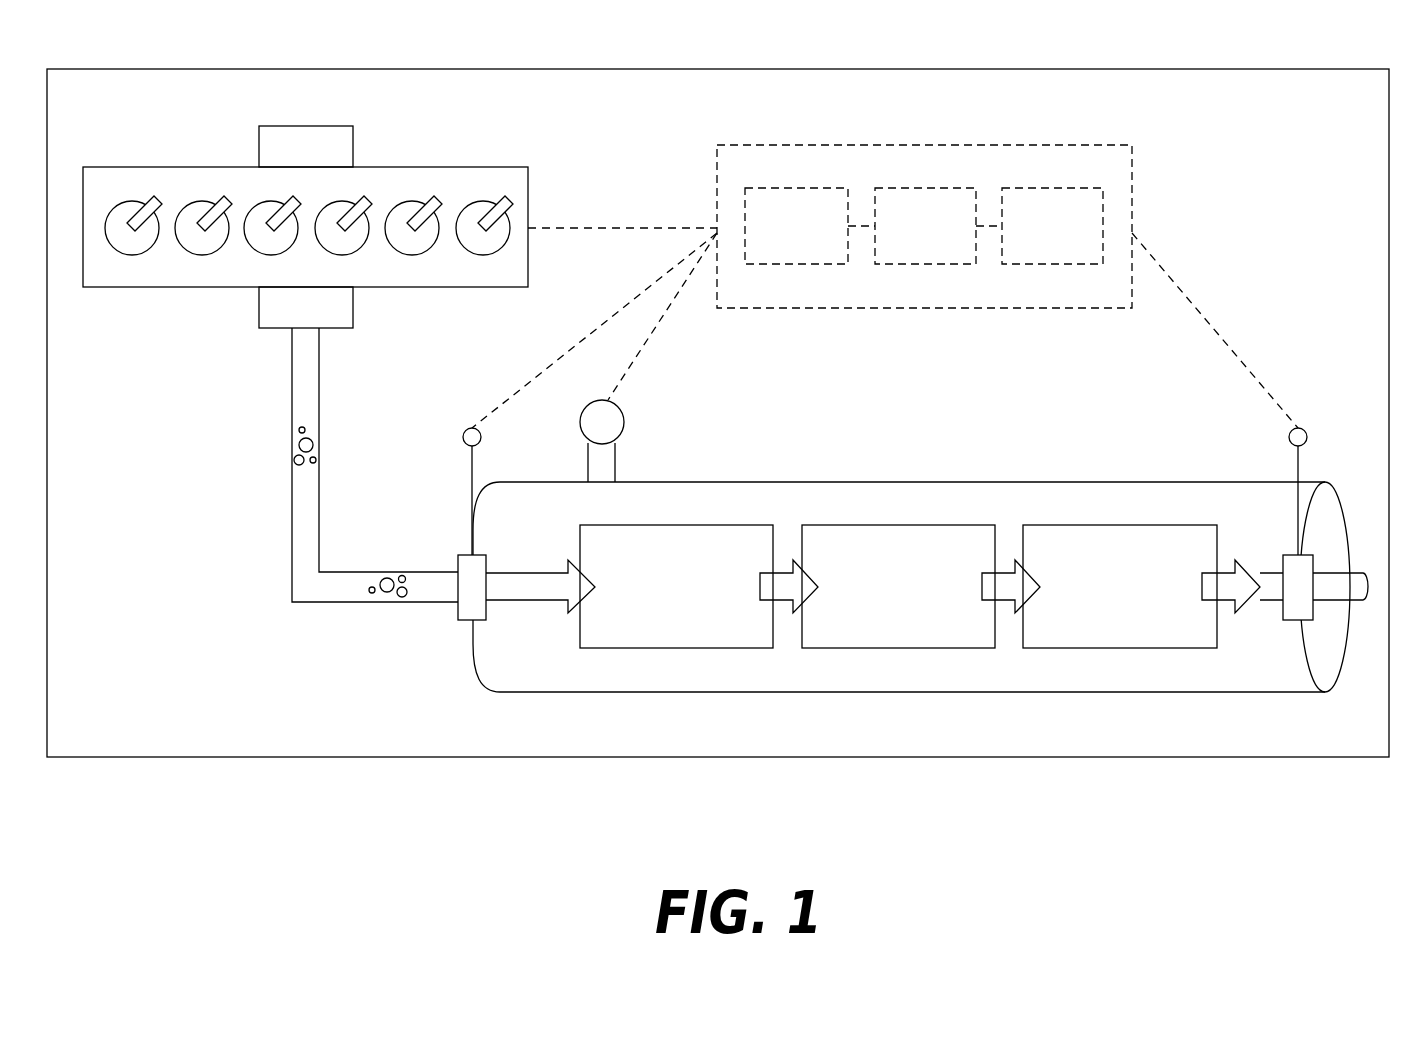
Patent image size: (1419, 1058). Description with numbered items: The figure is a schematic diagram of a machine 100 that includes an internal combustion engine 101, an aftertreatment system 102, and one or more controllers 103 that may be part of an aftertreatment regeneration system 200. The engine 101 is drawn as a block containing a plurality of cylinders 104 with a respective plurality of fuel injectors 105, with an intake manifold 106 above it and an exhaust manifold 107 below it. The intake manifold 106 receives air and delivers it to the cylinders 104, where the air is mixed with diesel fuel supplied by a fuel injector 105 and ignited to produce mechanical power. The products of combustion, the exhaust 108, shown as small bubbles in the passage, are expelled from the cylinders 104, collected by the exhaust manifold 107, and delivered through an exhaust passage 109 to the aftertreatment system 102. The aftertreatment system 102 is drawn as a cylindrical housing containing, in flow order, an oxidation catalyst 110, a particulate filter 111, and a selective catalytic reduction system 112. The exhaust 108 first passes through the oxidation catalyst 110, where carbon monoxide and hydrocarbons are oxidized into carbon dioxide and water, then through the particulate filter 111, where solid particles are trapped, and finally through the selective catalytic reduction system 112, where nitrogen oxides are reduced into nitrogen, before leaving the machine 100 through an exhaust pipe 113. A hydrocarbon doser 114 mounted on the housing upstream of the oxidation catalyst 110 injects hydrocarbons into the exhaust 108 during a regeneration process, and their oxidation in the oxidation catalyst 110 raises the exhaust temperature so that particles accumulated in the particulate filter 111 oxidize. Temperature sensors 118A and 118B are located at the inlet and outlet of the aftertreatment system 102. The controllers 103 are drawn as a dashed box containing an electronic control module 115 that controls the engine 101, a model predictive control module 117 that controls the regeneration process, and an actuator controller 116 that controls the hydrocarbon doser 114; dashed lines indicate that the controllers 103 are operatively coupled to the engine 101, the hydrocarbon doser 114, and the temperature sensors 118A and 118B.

The machine 100 is at (1168, 67).
The aftertreatment regeneration system 200 is at (973, 223).
The internal combustion engine 101 is at (195, 288).
The aftertreatment system 102 is at (1090, 466).
The controller 103 is at (924, 248).
The cylinder 104 is at (411, 200).
The fuel injector 105 is at (413, 224).
The intake manifold 106 is at (262, 148).
The exhaust manifold 107 is at (354, 312).
The exhaust 108 is at (326, 447).
The exhaust passage 109 is at (292, 548).
The oxidation catalyst 110 is at (661, 622).
The particulate filter 111 is at (883, 622).
The selective catalytic reduction system 112 is at (1105, 622).
The exhaust pipe 113 is at (1333, 600).
The hydrocarbon doser 114 is at (622, 420).
The electronic control module 115 is at (781, 257).
The actuator controller 116 is at (1037, 257).
The model predictive control module 117 is at (910, 257).
The temperature sensor 118A is at (458, 590).
The temperature sensor 118B is at (1283, 590).